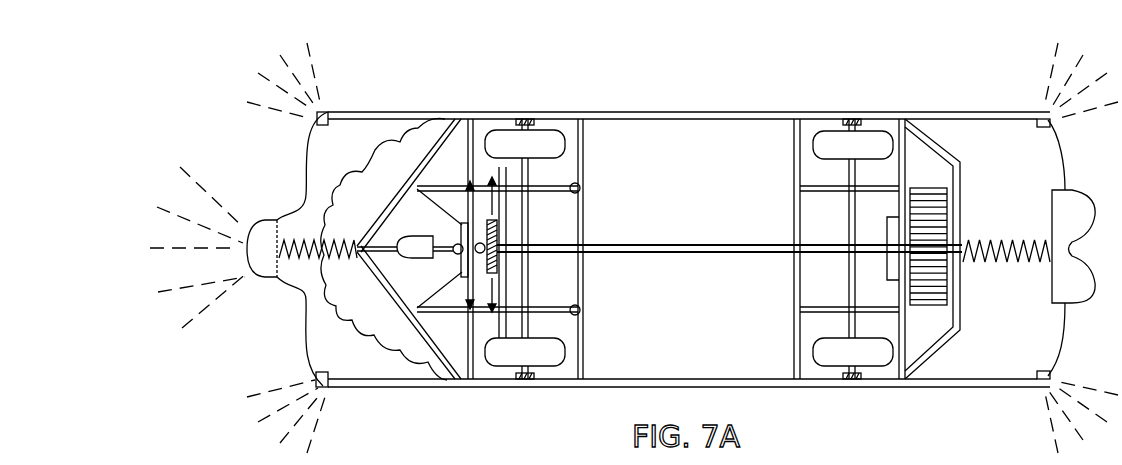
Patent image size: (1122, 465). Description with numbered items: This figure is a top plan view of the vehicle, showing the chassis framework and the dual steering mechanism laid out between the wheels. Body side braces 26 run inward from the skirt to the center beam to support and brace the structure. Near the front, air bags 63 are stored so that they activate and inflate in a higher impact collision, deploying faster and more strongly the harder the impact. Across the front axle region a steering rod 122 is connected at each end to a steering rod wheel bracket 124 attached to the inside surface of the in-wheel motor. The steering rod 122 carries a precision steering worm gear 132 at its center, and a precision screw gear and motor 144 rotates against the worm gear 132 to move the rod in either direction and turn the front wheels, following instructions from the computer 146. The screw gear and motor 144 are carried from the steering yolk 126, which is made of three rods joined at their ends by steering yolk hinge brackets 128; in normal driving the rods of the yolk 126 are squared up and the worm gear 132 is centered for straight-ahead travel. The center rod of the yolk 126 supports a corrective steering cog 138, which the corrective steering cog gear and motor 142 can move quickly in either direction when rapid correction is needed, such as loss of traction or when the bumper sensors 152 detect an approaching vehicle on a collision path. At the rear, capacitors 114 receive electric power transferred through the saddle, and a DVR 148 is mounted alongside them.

The body side brace 26 is at (477, 125).
The air bag 63 is at (353, 305).
The capacitor 114 is at (922, 192).
The steering rod 122 is at (505, 160).
The steering rod wheel bracket 124 is at (468, 150).
The steering yolk 126 is at (557, 190).
The steering yolk hinge bracket 128 is at (581, 188).
The precision steering worm gear 132 is at (497, 262).
The corrective steering cog 138 is at (463, 263).
The corrective steering cog gear and motor 142 is at (463, 237).
The precision screw gear and motor 144 is at (497, 230).
The computer 146 is at (415, 247).
The DVR 148 is at (887, 222).
The bumper sensors 152 is at (323, 112).